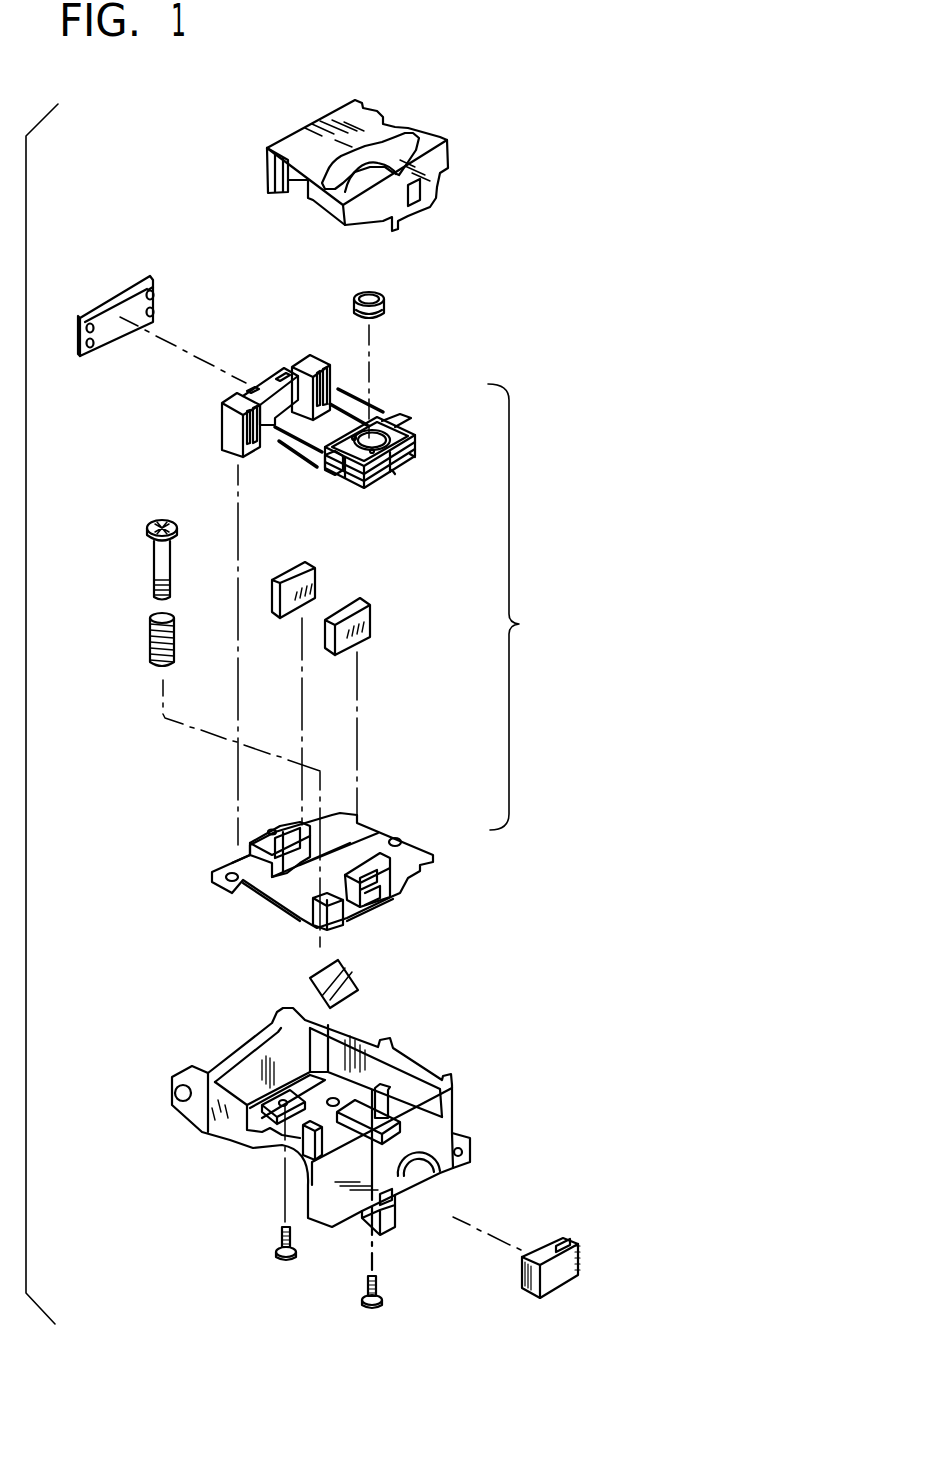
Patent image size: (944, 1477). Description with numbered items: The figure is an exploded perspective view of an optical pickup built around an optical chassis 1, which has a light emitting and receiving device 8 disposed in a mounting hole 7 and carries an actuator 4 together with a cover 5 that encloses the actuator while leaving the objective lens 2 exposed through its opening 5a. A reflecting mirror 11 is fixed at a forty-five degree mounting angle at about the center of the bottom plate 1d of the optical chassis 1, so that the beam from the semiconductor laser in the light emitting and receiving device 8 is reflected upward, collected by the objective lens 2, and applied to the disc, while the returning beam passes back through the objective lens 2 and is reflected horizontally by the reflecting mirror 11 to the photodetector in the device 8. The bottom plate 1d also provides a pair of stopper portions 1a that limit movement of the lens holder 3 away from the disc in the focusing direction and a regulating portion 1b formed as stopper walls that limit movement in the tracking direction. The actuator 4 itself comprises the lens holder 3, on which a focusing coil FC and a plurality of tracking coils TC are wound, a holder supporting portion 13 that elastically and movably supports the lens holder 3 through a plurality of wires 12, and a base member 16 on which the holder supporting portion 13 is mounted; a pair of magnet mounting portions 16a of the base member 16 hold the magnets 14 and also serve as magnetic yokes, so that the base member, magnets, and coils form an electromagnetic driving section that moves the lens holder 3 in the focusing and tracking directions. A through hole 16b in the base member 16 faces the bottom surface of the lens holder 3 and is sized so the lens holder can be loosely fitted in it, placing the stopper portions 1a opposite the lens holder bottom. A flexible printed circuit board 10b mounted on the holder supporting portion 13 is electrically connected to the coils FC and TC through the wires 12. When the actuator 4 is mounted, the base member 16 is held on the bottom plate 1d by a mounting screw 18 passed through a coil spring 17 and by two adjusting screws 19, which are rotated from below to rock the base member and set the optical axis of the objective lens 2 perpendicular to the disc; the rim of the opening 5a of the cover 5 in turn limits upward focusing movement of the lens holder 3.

The optical chassis 1 is at (225, 1148).
The stopper portions 1a is at (347, 1110).
The regulating portion 1b is at (383, 1082).
The bottom plate 1d is at (310, 1082).
The objective lens 2 is at (386, 300).
The lens holder 3 is at (413, 425).
The actuator 4 is at (549, 638).
The cover 5 is at (453, 157).
The opening 5a is at (360, 176).
The mounting hole 7 is at (421, 1168).
The light emitting and receiving device 8 is at (553, 1275).
The flexible printed circuit board 10b is at (125, 300).
The reflecting mirror 11 is at (348, 981).
The wires 12 is at (300, 460).
The holder supporting portion 13 is at (236, 398).
The magnets 14 is at (312, 565).
The base member 16 is at (397, 826).
The magnet mounting portions 16a is at (306, 820).
The through hole 16b is at (308, 886).
The coil spring 17 is at (150, 642).
The mounting screw 18 is at (158, 563).
The adjusting screws 19 is at (284, 1262).
The tracking coils TC is at (417, 459).
The focusing coil FC is at (393, 470).